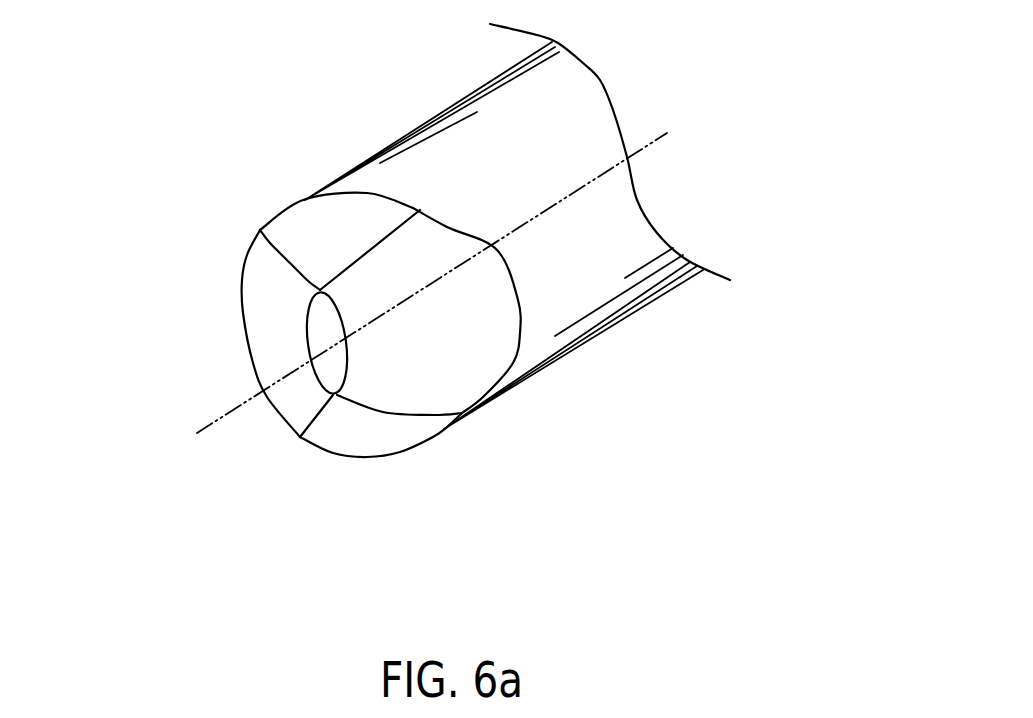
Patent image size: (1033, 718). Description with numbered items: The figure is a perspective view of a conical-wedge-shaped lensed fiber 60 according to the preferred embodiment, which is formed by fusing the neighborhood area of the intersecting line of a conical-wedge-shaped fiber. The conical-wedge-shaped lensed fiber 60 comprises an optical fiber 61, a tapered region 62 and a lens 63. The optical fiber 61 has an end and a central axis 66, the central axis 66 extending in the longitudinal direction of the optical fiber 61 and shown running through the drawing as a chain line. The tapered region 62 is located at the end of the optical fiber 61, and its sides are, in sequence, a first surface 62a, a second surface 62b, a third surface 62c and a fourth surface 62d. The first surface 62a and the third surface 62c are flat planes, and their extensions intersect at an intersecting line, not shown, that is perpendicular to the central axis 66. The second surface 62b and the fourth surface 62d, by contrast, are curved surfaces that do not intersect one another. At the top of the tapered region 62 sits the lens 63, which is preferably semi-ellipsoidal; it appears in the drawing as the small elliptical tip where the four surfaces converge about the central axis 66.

The conical-wedge-shaped lensed fiber 60 is at (391, 287).
The optical fiber 61 is at (460, 153).
The tapered region 62 is at (356, 335).
The first surface 62a is at (462, 333).
The second surface 62b is at (323, 233).
The third surface 62c is at (270, 308).
The fourth surface 62d is at (370, 427).
The lens 63 is at (323, 323).
The central axis 66 is at (650, 140).